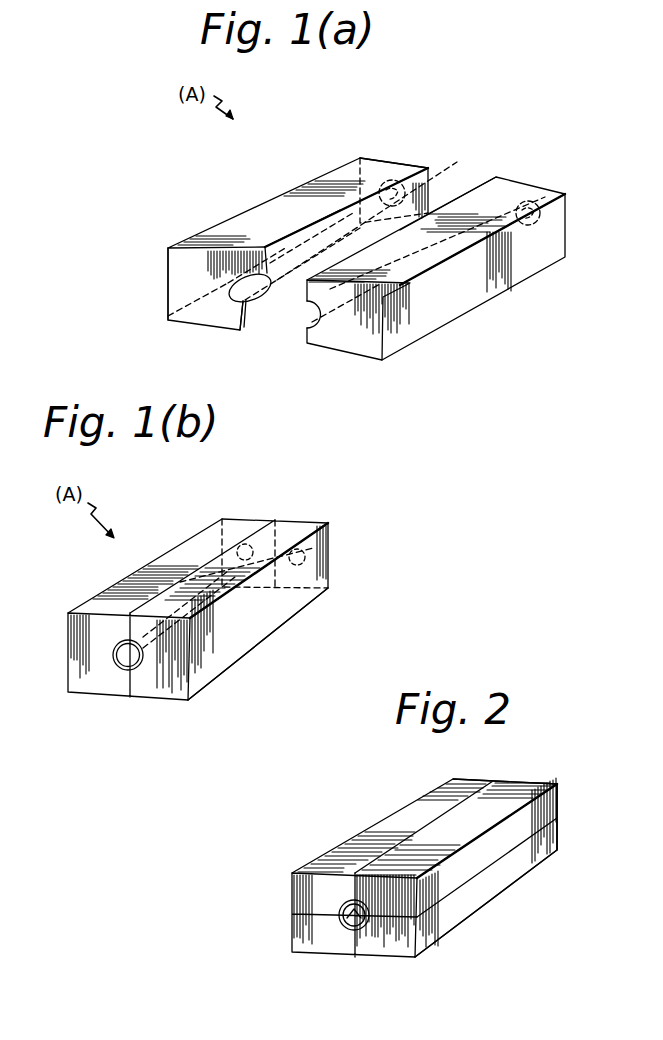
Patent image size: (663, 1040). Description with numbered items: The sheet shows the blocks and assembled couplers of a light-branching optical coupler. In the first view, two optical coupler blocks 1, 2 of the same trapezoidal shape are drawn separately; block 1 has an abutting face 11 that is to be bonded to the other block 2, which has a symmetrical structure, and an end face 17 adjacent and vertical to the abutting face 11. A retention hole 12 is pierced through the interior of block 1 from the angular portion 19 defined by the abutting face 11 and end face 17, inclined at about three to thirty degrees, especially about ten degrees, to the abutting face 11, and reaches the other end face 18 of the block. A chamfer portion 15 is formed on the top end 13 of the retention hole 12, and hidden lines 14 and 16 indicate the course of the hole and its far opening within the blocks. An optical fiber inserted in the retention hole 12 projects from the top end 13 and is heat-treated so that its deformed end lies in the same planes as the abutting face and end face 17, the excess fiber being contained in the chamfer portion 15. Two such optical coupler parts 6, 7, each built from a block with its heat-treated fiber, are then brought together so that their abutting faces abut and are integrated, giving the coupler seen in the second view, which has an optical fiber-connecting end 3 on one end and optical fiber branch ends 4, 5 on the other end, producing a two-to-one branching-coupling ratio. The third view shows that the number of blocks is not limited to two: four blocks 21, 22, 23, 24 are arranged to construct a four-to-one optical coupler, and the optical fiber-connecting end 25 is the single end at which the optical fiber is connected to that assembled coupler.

In FIG. 1A, the optical coupler block 1 is at (386, 149).
In FIG. 1A, the optical coupler block 2 is at (556, 184).
In FIG. 1B, the optical fiber-connecting end 3 is at (120, 670).
In FIG. 1B, the optical fiber branch end 4 is at (247, 545).
In FIG. 1B, the optical fiber branch end 5 is at (305, 552).
In FIG. 1B, the optical coupler part 6 is at (175, 562).
In FIG. 1B, the optical coupler part 7 is at (283, 608).
In FIG. 1A, the abutting face 11 is at (265, 247).
In FIG. 1A, the retention hole 12 is at (313, 247).
In FIG. 1A, the top end of the retention hole 13 is at (238, 293).
In FIG. 1A, the axis line of fiber passage 14 is at (373, 210).
In FIG. 1A, the chamfer portion 15 is at (228, 282).
In FIG. 1A, the hidden hole in first block 16 is at (400, 182).
In FIG. 1A, the end face 17 is at (182, 262).
In FIG. 1A, the other end face 18 is at (368, 157).
In FIG. 1A, the angular portion 19 is at (245, 305).
In FIG. 1A, the block 21 is at (462, 190).
In FIG. 1A, the block 22 is at (528, 213).
In FIG. 2, the block 22 is at (513, 813).
In FIG. 2, the block 23 is at (292, 950).
In FIG. 2, the block 24 is at (497, 892).
In FIG. 2, the optical fiber-connecting end 25 is at (348, 930).